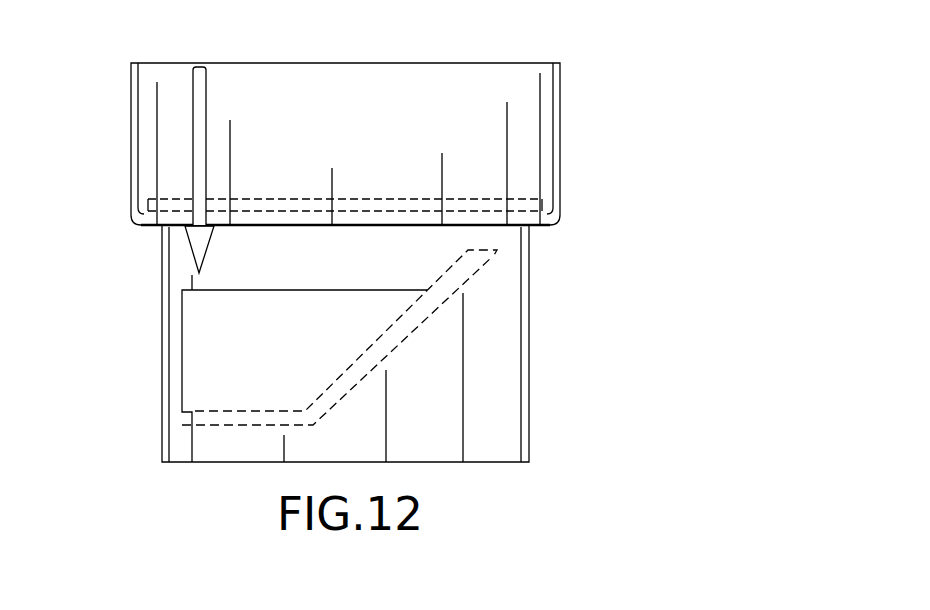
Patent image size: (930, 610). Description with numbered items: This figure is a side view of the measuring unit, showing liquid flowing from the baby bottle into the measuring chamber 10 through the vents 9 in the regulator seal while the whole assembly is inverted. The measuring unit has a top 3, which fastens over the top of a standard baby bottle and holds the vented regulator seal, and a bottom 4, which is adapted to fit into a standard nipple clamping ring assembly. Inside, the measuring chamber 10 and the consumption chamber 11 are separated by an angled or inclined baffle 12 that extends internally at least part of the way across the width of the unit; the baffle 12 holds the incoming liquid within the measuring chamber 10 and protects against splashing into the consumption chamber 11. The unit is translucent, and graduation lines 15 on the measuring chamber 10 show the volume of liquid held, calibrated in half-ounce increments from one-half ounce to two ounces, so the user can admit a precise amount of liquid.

The top 3 is at (576, 63).
The bottom 4 is at (556, 459).
The vents 9 is at (150, 235).
The measuring chamber 10 is at (268, 364).
The consumption chamber 11 is at (490, 396).
The angled baffle 12 is at (424, 337).
The graduation lines 15 is at (303, 232).